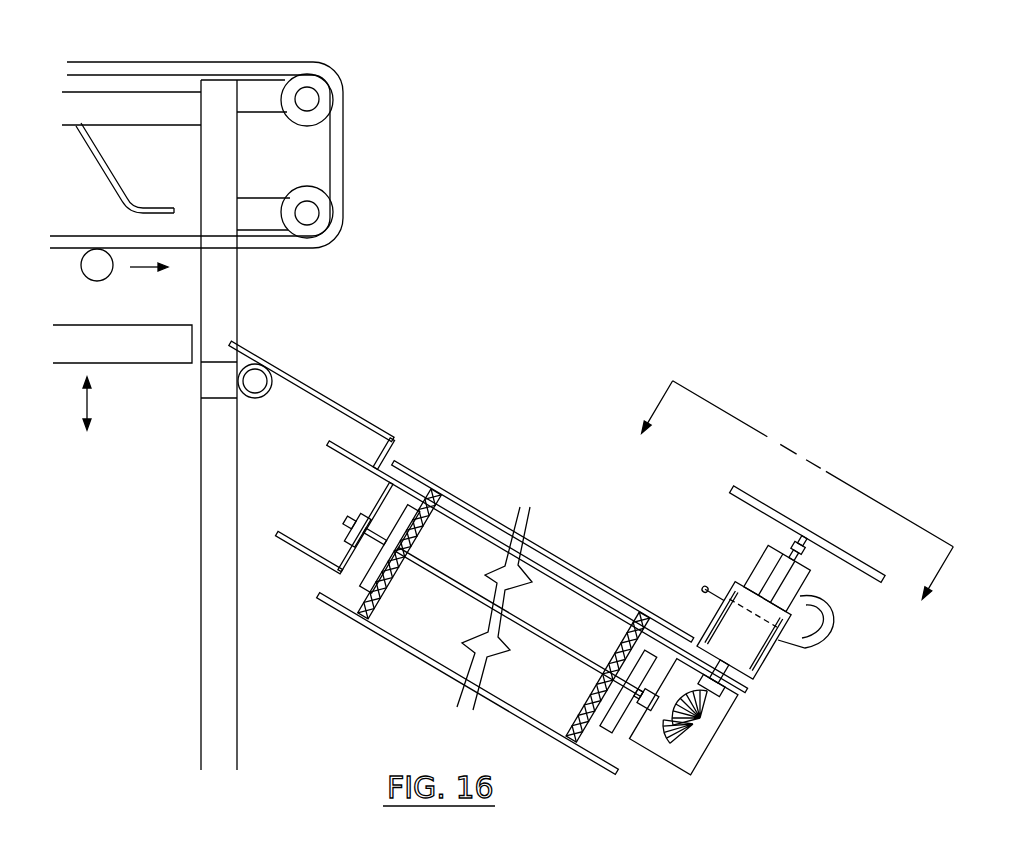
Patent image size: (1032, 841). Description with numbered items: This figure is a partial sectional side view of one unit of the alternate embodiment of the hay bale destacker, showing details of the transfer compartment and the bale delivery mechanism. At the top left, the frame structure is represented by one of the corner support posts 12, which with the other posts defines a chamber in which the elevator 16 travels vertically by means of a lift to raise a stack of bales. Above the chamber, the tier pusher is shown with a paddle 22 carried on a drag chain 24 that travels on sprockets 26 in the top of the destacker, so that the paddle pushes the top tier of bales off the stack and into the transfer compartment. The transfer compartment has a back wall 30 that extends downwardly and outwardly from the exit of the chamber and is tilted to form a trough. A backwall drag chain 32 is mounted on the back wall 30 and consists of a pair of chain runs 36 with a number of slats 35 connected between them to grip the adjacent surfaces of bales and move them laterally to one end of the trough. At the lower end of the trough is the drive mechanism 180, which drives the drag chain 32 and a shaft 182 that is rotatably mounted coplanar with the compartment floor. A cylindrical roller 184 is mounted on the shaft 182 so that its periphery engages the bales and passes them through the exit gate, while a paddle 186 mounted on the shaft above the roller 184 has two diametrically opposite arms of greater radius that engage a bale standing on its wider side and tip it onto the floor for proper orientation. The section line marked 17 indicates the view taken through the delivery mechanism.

The corner support post 12 is at (237, 306).
The elevator 16 is at (115, 365).
The section line 17- 17 is at (789, 509).
The paddle 22 is at (107, 280).
The drag chain 24 is at (227, 62).
The sprocket 26 is at (312, 120).
The back wall 30 is at (387, 440).
The backwall drag chain 32 is at (515, 445).
The slat 35 is at (443, 675).
The chain run 36 is at (385, 612).
The drive mechanism 180 is at (710, 757).
The shaft 182 is at (778, 592).
The cylindrical roller 184 is at (763, 673).
The paddle 186 is at (750, 503).